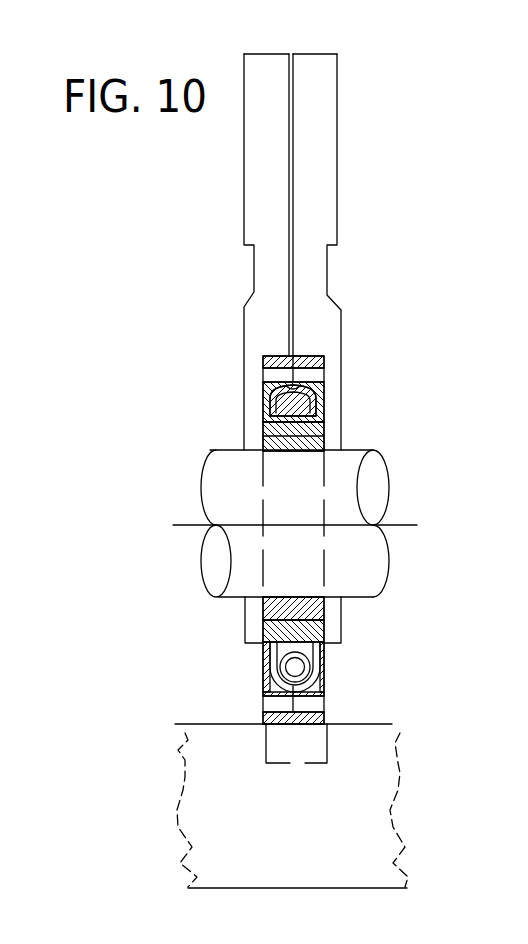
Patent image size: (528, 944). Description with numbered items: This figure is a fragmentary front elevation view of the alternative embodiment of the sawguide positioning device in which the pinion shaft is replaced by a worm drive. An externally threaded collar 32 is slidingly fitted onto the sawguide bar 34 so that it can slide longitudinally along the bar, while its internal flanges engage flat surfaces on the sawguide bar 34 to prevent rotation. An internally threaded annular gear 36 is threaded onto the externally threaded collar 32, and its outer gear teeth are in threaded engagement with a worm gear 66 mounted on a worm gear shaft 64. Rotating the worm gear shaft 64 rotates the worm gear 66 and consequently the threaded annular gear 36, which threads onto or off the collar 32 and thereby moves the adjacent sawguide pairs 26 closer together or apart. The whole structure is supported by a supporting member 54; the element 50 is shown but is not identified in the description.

The sawguide set 26 is at (254, 292).
The externally threaded collar 32 is at (303, 414).
The sawguide bar 34 is at (225, 575).
The internally threaded annular gear 36 is at (312, 437).
The seal block 50 is at (323, 352).
The supporting member 54 is at (208, 747).
The worm gear shaft 64 is at (293, 670).
The worm gear 66 is at (318, 686).